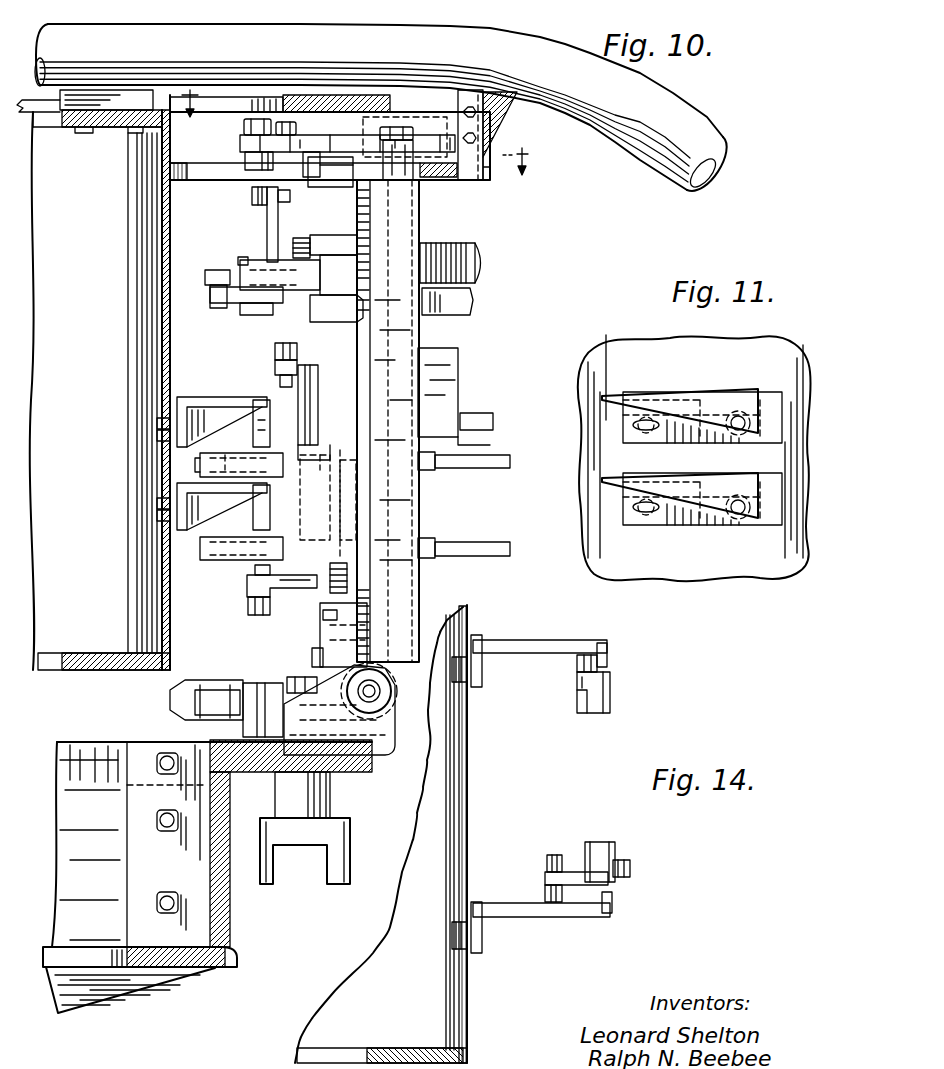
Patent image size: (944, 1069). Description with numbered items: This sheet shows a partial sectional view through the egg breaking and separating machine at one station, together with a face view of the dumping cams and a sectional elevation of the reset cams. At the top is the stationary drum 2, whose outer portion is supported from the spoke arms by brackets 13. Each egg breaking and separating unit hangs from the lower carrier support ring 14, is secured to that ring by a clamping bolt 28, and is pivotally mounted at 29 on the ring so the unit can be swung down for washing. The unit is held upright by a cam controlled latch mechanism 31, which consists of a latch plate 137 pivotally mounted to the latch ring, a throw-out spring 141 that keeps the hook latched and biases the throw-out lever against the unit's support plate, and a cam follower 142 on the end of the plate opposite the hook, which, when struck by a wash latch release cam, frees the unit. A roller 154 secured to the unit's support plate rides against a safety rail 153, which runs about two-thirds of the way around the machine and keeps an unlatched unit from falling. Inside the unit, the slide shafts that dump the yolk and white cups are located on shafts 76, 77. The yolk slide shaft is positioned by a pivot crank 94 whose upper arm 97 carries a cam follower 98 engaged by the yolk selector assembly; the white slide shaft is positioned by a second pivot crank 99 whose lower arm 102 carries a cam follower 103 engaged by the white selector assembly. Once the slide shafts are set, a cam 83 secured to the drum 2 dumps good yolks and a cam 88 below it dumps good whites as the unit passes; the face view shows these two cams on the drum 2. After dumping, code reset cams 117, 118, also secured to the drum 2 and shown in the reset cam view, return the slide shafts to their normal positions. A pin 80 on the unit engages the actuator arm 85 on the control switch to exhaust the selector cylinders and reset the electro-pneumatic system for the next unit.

In FIG. 10, the stationary drum 2 is at (233, 33).
In FIG. 14, the stationary drum 2 is at (467, 777).
In FIG. 11, the stationary drum 2 is at (660, 372).
In FIG. 10, the brackets 13 is at (357, 147).
In FIG. 10, the lower carrier support ring 14 is at (235, 915).
In FIG. 10, the clamping bolt 28 is at (352, 868).
In FIG. 10, the pivotal mounting 29 is at (369, 691).
In FIG. 10, the cam controlled latch mechanism 31 is at (368, 128).
In FIG. 10, the shaft 76 is at (205, 455).
In FIG. 10, the shaft 77 is at (200, 560).
In FIG. 10, the pin 80 is at (260, 695).
In FIG. 10, the cam 83 is at (237, 400).
In FIG. 11, the cam 83 is at (762, 397).
In FIG. 10, the actuator arm 85 is at (210, 681).
In FIG. 10, the cam 88 is at (180, 484).
In FIG. 11, the cam 88 is at (770, 480).
In FIG. 10, the pivot crank 94 is at (315, 393).
In FIG. 14, the pivot crank 94 is at (612, 695).
In FIG. 10, the upper arm 97 is at (275, 366).
In FIG. 10, the cam follower 98 is at (278, 348).
In FIG. 14, the cam follower 98 is at (575, 664).
In FIG. 14, the pivot crank 99 is at (586, 846).
In FIG. 10, the lower arm 102 is at (282, 594).
In FIG. 10, the cam follower 103 is at (252, 615).
In FIG. 14, the cam follower 103 is at (543, 888).
In FIG. 14, the code reset cam 117 is at (565, 640).
In FIG. 14, the code reset cam 118 is at (560, 912).
In FIG. 10, the latch plate 137 is at (274, 130).
In FIG. 10, the throw-out spring 141 is at (308, 178).
In FIG. 10, the cam follower 142 is at (244, 160).
In FIG. 10, the safety rail 153 is at (443, 180).
In FIG. 10, the roller 154 is at (412, 182).